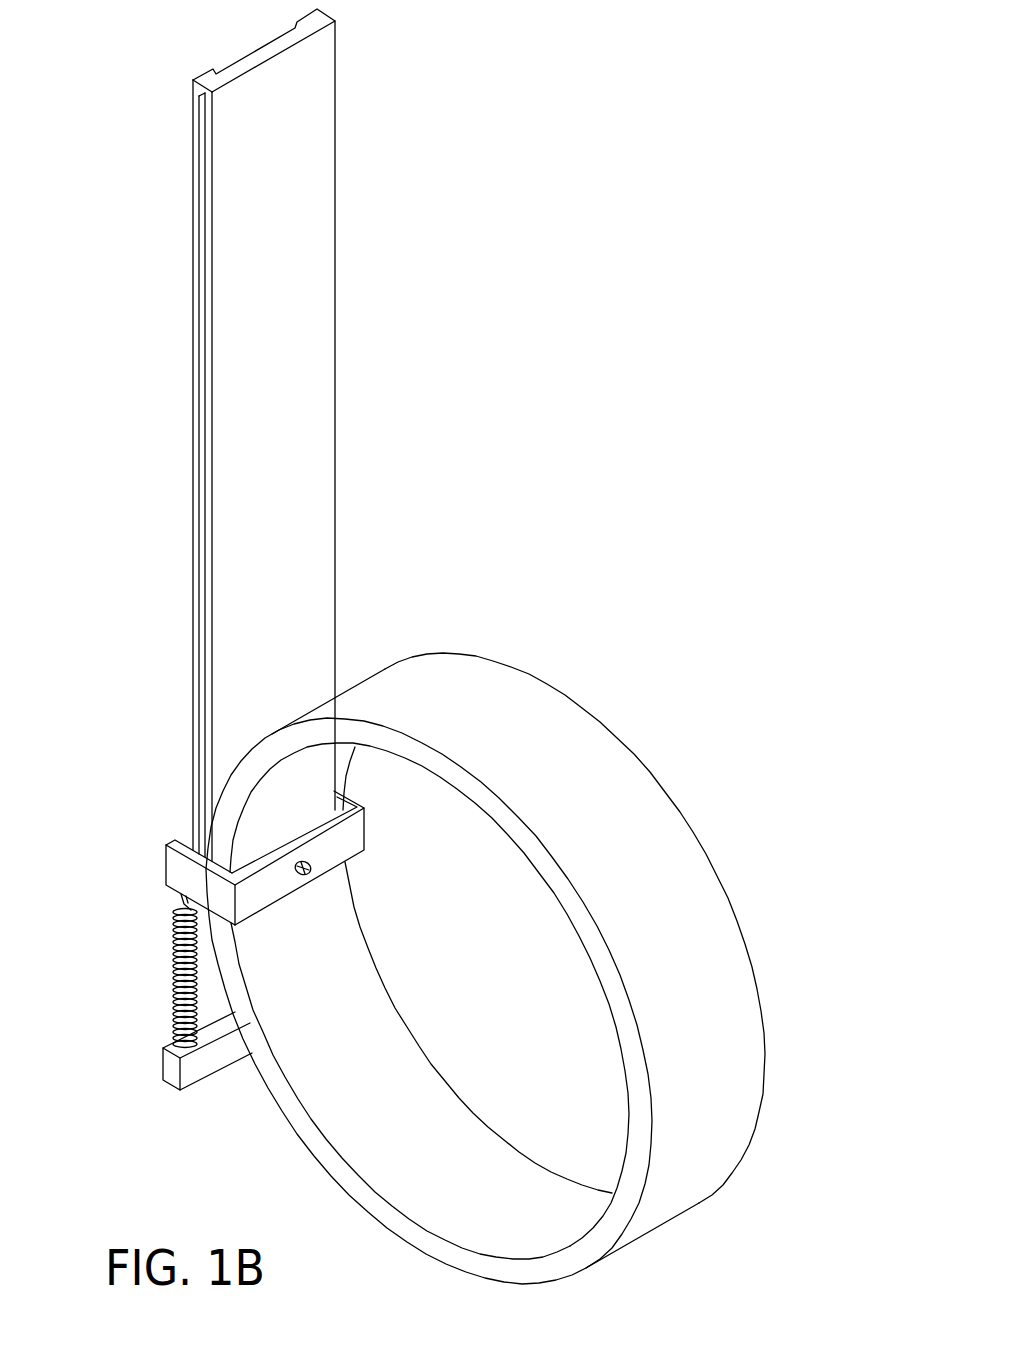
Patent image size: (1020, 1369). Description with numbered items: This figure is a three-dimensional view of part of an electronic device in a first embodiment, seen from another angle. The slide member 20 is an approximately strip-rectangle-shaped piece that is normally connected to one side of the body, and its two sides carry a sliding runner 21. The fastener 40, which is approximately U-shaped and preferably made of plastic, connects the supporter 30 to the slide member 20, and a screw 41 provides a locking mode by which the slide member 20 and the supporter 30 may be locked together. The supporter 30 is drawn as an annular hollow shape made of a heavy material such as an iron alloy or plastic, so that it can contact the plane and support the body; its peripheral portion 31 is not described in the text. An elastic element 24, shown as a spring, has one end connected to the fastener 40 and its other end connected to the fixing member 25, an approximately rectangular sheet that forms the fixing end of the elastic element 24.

The slide member 20 is at (290, 50).
The sliding runner 21 is at (203, 257).
The elastic element 24 is at (178, 974).
The fixing member 25 is at (213, 1058).
The supporter 30 is at (552, 733).
The outer peripheral surface 31 is at (565, 1280).
The fastener 40 is at (180, 870).
The screw 41 is at (310, 873).